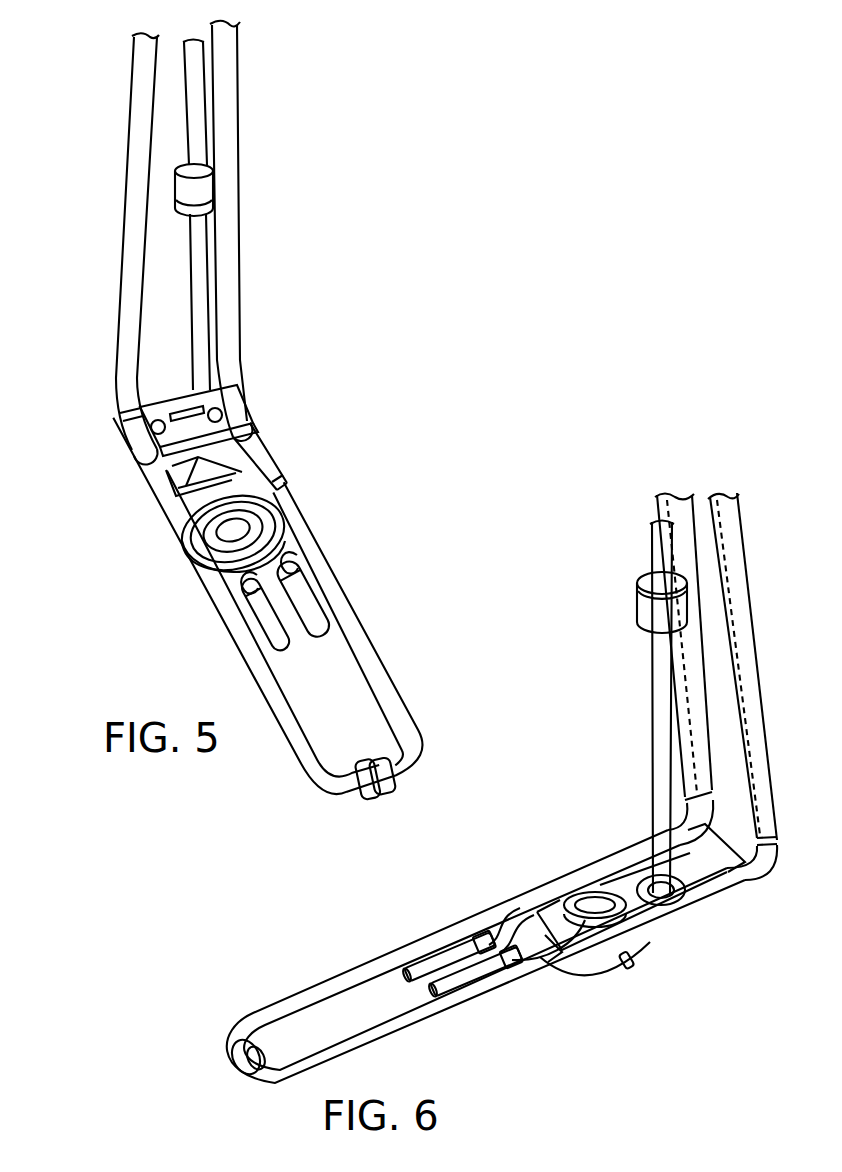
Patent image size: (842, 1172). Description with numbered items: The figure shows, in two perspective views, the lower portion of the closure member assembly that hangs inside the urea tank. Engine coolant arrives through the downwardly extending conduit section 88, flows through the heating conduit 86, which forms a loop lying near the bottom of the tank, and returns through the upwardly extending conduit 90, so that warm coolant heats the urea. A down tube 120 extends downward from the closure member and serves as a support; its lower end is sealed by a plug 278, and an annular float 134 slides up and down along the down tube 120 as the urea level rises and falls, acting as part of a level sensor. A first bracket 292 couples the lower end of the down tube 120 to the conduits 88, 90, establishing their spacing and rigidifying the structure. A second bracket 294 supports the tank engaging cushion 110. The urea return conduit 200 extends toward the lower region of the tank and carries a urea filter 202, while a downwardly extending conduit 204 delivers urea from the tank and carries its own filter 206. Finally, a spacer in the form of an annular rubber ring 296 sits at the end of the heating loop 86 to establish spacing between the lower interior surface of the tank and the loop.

In FIG. 5, the heating conduit 86 is at (327, 780).
In FIG. 6, the heating conduit 86 is at (313, 982).
In FIG. 5, the downwardly extending conduit section 88 is at (137, 100).
In FIG. 6, the downwardly extending conduit section 88 is at (738, 567).
In FIG. 5, the upwardly extending conduit 90 is at (227, 140).
In FIG. 6, the upwardly extending conduit 90 is at (697, 653).
In FIG. 5, the tank engaging cushion 110 is at (202, 550).
In FIG. 6, the tank engaging cushion 110 is at (610, 965).
In FIG. 6, the down tube 120 is at (652, 700).
In FIG. 5, the float 134 is at (180, 182).
In FIG. 6, the float 134 is at (642, 608).
In FIG. 5, the urea return conduit 200 is at (292, 558).
In FIG. 6, the urea return conduit 200 is at (507, 903).
In FIG. 5, the urea filter 202 is at (320, 617).
In FIG. 6, the urea filter 202 is at (440, 957).
In FIG. 5, the downwardly extending conduit 204 is at (233, 578).
In FIG. 6, the downwardly extending conduit 204 is at (558, 960).
In FIG. 5, the filter 206 is at (270, 630).
In FIG. 6, the filter 206 is at (457, 985).
In FIG. 5, the plug 278 is at (198, 480).
In FIG. 5, the first bracket 292 is at (283, 437).
In FIG. 6, the first bracket 292 is at (671, 909).
In FIG. 6, the second bracket 294 is at (532, 948).
In FIG. 5, the annular rubber ring 296 is at (377, 797).
In FIG. 6, the annular rubber ring 296 is at (230, 1063).